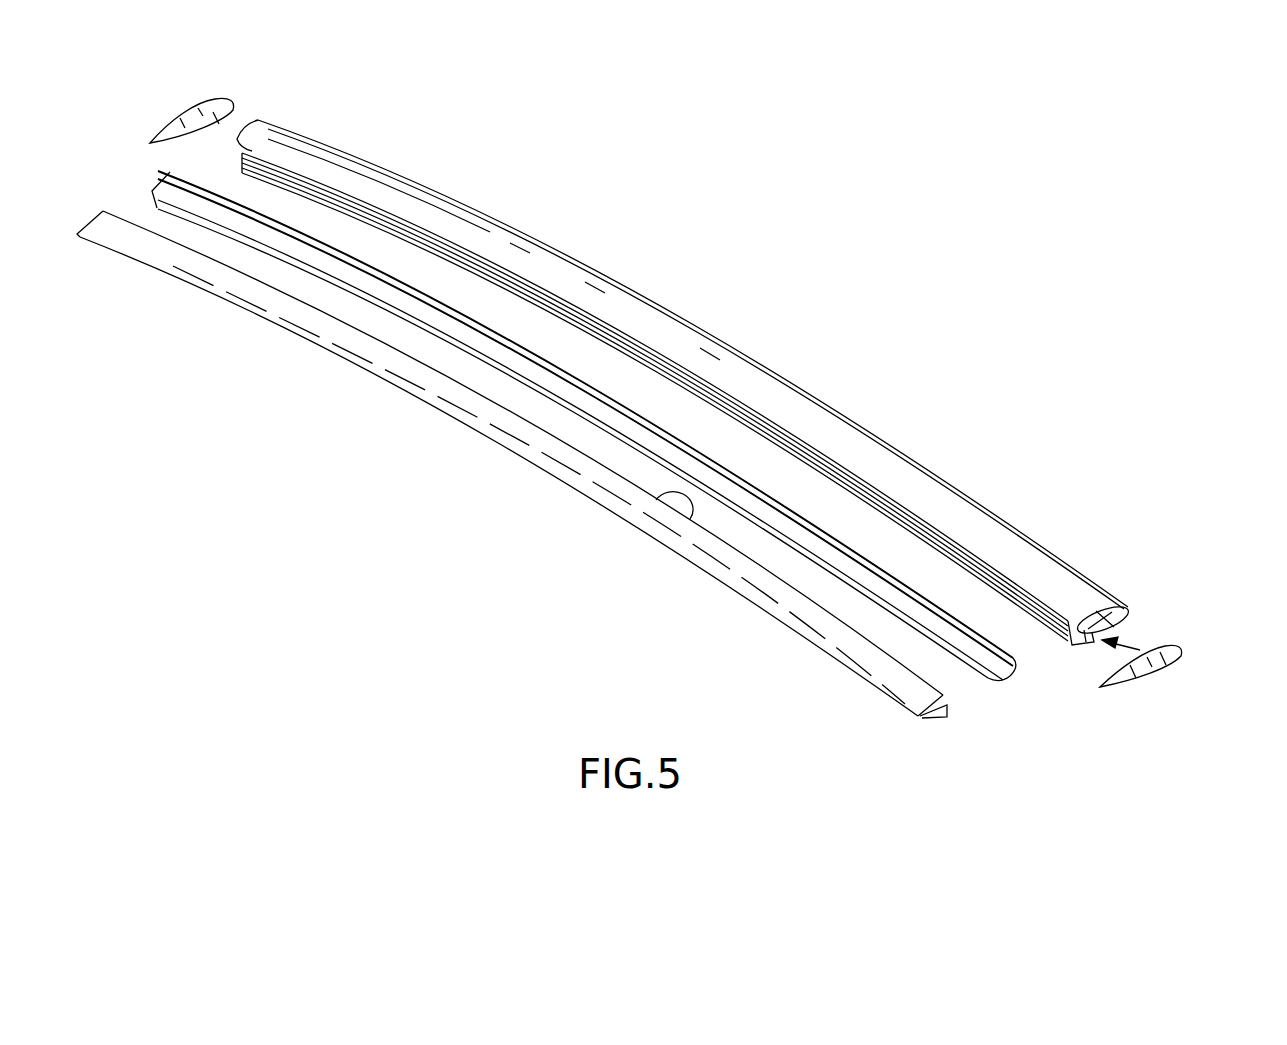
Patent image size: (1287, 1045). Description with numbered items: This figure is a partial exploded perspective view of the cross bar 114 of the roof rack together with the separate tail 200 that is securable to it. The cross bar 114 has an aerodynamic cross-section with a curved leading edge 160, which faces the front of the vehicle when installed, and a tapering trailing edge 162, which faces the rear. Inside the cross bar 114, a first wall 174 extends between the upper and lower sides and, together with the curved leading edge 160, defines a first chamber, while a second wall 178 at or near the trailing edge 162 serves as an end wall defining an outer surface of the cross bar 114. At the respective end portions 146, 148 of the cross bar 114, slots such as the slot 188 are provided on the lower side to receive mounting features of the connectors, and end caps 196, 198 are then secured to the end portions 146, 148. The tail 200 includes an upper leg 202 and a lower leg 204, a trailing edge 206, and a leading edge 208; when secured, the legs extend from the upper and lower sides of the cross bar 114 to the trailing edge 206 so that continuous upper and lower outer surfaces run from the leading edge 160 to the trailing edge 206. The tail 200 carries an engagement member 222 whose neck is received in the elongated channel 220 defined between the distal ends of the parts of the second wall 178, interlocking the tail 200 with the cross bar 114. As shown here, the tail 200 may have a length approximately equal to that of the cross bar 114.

The cross bar 114 is at (838, 220).
The end portion 146 is at (300, 150).
The end portion 148 is at (1152, 567).
The leading edge 160 is at (733, 420).
The trailing edge 162 is at (568, 300).
The first wall 174 is at (1130, 613).
The second wall 178 is at (1063, 637).
The slot 188 is at (1091, 643).
The end cap 196 is at (180, 118).
The end cap 198 is at (1160, 667).
The tail 200 is at (513, 501).
The upper leg 202 is at (912, 690).
The lower leg 204 is at (935, 726).
The trailing edge 206 is at (757, 607).
The leading edge 208 is at (657, 500).
The channel 220 is at (1175, 650).
The engagement member 222 is at (432, 341).